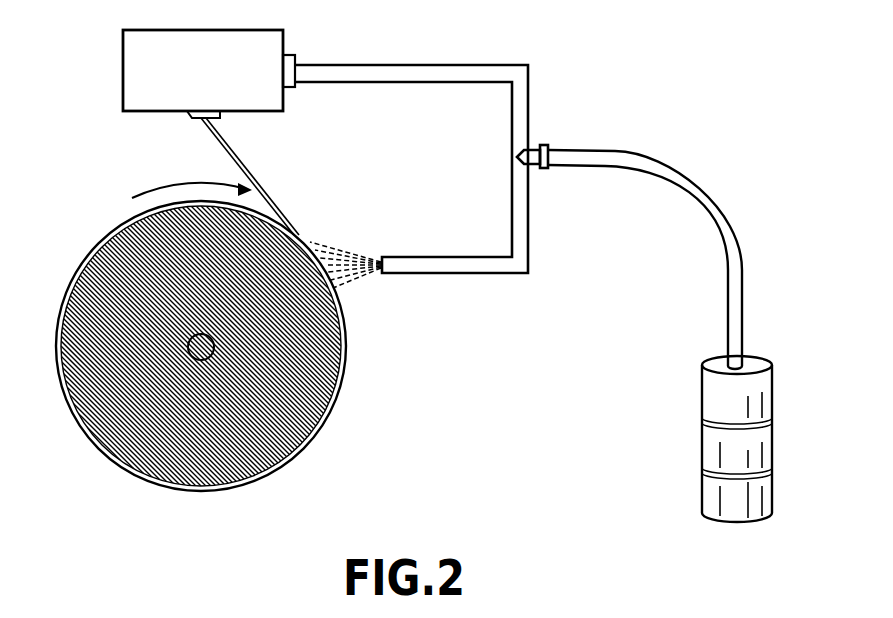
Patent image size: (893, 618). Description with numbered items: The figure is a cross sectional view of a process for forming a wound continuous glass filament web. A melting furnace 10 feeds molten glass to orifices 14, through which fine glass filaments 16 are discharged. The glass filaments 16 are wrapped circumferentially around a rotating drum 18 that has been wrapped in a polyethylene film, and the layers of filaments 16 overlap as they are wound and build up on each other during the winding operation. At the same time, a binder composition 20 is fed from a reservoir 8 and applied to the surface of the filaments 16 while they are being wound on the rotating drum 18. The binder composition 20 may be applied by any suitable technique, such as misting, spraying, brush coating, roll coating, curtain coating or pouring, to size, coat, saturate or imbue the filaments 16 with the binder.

The reservoir 8 is at (710, 487).
The melting furnace 10 is at (220, 87).
The orifices 14 is at (187, 117).
The glass filaments 16 is at (261, 182).
The rotating drum 18 is at (212, 422).
The binder composition 20 is at (357, 252).